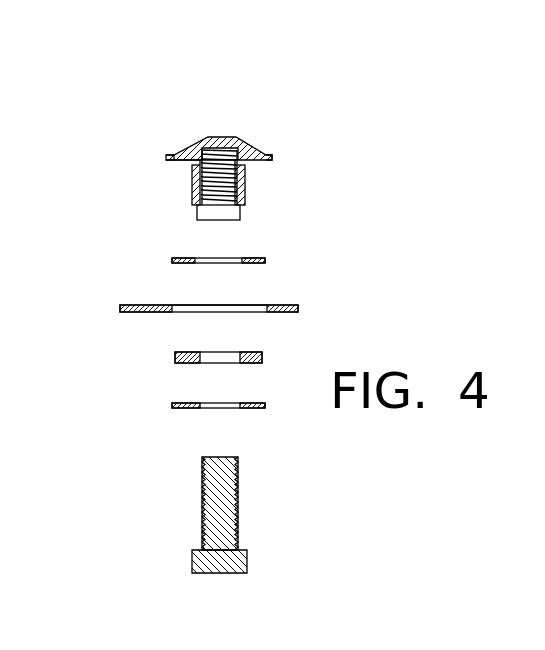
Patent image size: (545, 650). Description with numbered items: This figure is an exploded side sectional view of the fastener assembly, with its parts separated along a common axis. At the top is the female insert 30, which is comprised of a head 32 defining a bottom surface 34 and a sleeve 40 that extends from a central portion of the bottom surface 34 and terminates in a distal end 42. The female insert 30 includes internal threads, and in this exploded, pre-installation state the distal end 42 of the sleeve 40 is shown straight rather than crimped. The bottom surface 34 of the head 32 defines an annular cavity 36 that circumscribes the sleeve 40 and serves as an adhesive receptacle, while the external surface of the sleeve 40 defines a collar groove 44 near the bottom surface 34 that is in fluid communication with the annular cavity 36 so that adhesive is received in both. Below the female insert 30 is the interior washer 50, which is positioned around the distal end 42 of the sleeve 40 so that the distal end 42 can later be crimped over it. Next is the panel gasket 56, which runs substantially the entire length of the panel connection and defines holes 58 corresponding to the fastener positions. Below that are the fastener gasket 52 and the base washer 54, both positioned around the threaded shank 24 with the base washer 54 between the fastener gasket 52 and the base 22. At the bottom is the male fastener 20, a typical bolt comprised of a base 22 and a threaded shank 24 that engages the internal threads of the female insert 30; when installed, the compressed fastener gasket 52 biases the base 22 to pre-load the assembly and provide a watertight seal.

The male fastener 20 is at (220, 533).
The base 22 is at (192, 563).
The threaded shank 24 is at (201, 487).
The female insert 30 is at (207, 140).
The head 32 is at (173, 152).
The bottom surface 34 is at (271, 159).
The annular cavity 36 is at (180, 170).
The sleeve 40 is at (246, 190).
The distal end 42 is at (241, 217).
The collar groove 44 is at (192, 172).
The interior washer 50 is at (172, 260).
The fastener gasket 52 is at (175, 358).
The base washer 54 is at (172, 406).
The panel gasket 56 is at (120, 310).
The holes 58 is at (255, 305).